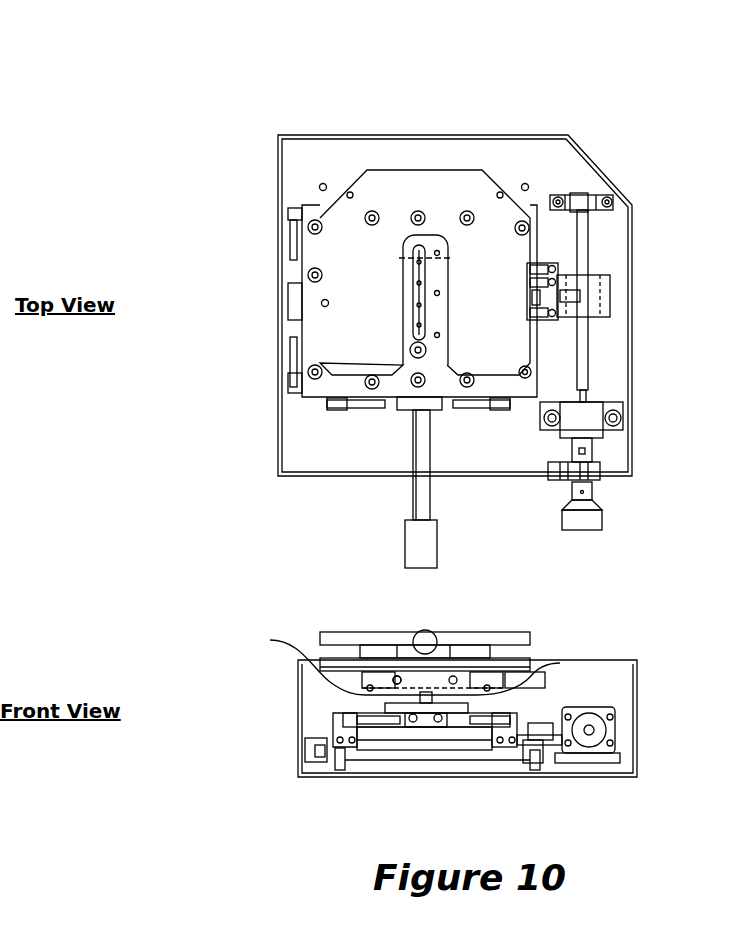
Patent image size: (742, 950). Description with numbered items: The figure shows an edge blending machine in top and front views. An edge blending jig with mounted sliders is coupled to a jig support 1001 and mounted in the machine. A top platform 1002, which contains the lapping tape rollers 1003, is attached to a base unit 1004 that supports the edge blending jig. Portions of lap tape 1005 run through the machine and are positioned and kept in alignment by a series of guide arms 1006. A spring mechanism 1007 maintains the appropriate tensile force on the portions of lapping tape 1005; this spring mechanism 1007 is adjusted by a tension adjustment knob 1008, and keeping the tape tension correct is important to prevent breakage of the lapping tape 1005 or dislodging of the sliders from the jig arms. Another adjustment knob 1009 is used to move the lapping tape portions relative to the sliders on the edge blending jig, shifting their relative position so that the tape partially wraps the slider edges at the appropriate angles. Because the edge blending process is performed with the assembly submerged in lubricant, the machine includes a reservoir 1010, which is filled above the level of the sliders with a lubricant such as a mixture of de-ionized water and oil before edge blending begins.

The jig support 1001 is at (428, 283).
The top platform 1002 is at (352, 250).
The lapping tape rollers 1003 is at (487, 683).
The base unit 1004 is at (428, 718).
The lap tape 1005 is at (520, 690).
The guide arms 1006 is at (397, 688).
The spring mechanism 1007 is at (556, 298).
The tension adjustment knob 1008 is at (590, 517).
The adjustment knob 1009 is at (437, 548).
The reservoir 1010 is at (280, 423).